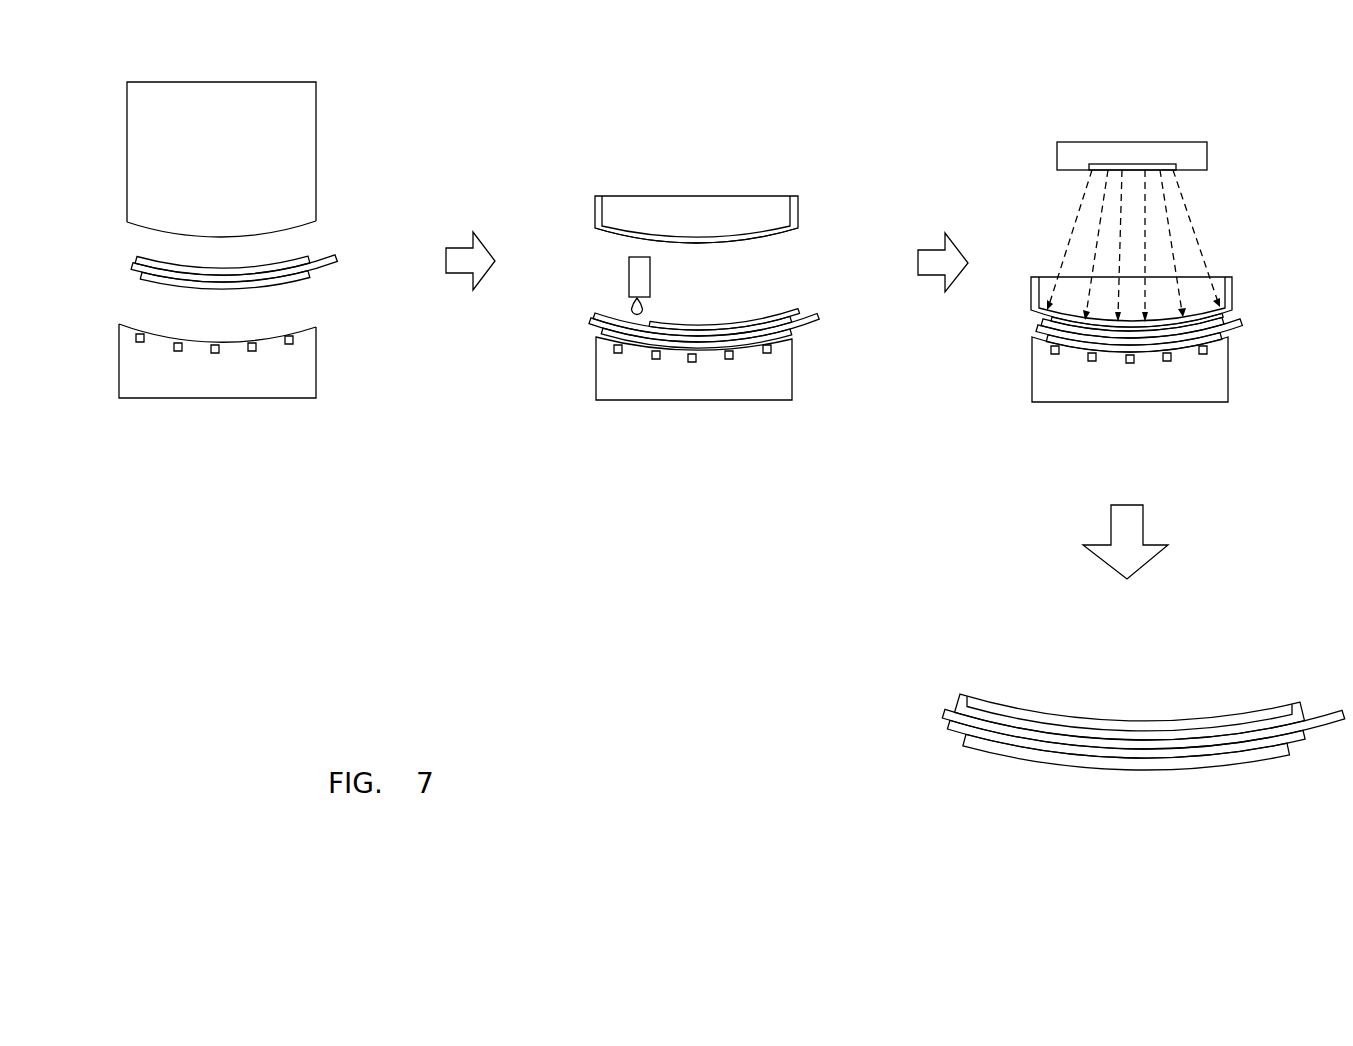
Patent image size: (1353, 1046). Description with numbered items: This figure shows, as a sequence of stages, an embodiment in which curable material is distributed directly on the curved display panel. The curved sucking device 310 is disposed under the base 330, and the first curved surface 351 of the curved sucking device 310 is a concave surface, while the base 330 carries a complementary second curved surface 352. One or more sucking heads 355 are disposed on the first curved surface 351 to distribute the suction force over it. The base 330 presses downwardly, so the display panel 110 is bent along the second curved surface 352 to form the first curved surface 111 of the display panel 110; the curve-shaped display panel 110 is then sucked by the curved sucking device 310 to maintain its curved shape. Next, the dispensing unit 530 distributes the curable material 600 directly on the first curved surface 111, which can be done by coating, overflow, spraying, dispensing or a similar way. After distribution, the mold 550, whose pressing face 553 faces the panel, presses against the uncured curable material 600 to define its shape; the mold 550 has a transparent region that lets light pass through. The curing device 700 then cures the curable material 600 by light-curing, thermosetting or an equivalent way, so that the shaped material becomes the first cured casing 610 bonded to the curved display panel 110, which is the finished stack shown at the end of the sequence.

The display panel 110 is at (157, 272).
The first curved surface of the display panel 111 is at (155, 253).
The curved sucking device 310 is at (308, 367).
The base 330 is at (308, 102).
The first curved surface of the curved sucking device 351 is at (303, 327).
The second curved surface of the base 352 is at (291, 231).
The sucking heads 355 is at (177, 345).
The dispensing unit 530 is at (633, 265).
The mold 550 is at (800, 212).
The curved bonding surface of cover lens 553 is at (750, 205).
The curable material 600 is at (787, 310).
The first cured casing 610 is at (1292, 708).
The curing device 700 is at (1143, 147).